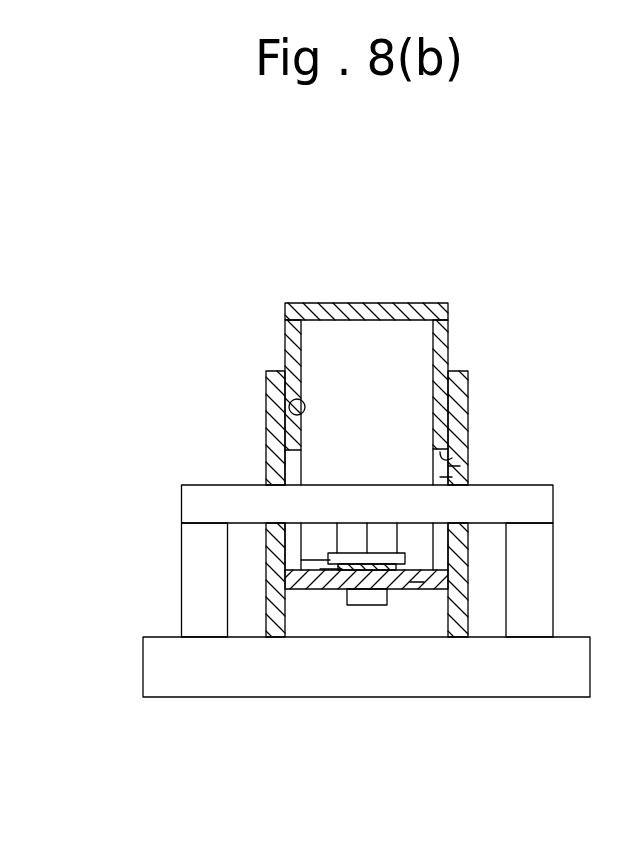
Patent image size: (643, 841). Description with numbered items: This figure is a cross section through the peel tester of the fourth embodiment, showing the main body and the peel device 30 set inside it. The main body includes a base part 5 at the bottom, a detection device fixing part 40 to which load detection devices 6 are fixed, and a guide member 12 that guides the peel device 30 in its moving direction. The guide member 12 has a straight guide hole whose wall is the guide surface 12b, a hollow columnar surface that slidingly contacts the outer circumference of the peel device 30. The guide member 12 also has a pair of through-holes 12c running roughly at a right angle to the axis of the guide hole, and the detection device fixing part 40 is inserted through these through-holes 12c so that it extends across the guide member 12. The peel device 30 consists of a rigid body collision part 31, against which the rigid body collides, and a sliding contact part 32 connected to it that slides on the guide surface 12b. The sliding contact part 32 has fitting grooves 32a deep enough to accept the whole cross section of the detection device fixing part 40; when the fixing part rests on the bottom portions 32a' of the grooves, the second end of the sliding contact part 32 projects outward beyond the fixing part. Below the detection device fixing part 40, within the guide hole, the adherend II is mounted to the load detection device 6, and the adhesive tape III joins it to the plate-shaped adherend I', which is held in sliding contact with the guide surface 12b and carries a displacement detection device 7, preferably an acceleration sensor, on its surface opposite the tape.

The base part 5 is at (158, 567).
The load detection device 6 is at (383, 542).
The displacement detection device 7 is at (386, 595).
The guide member 12 is at (281, 371).
The guide surface 12b is at (285, 415).
The through-holes 12c is at (275, 485).
The peel device 30 is at (499, 200).
The rigid body collision part 31 is at (367, 303).
The sliding contact part 32 is at (442, 390).
The fitting grooves 32a is at (517, 457).
The bottom portions 32a' is at (515, 430).
The detection device fixing part 40 is at (205, 484).
The adherend II is at (330, 560).
The adhesive tape III is at (342, 569).
The adherend I' is at (453, 677).